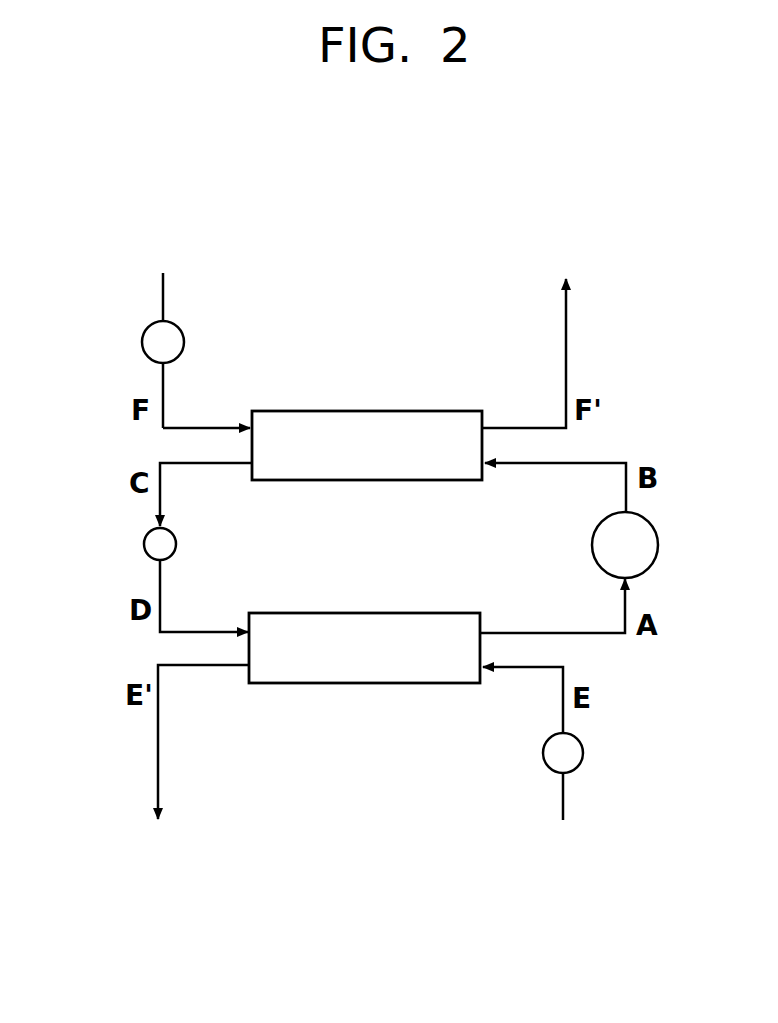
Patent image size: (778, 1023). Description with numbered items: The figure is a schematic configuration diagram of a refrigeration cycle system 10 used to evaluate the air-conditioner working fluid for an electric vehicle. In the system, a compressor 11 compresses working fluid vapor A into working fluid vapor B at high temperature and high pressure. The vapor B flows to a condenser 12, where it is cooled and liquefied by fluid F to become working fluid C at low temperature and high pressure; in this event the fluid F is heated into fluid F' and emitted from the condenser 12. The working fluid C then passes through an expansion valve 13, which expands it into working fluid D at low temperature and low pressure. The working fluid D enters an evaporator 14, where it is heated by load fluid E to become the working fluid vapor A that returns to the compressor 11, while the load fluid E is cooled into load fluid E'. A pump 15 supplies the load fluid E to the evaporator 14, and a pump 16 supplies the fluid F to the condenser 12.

The refrigeration cycle system 10 is at (340, 330).
The compressor 11 is at (658, 546).
The condenser 12 is at (392, 411).
The expansion valve 13 is at (144, 544).
The evaporator 14 is at (390, 613).
The pump 15 is at (583, 754).
The pump 16 is at (142, 342).